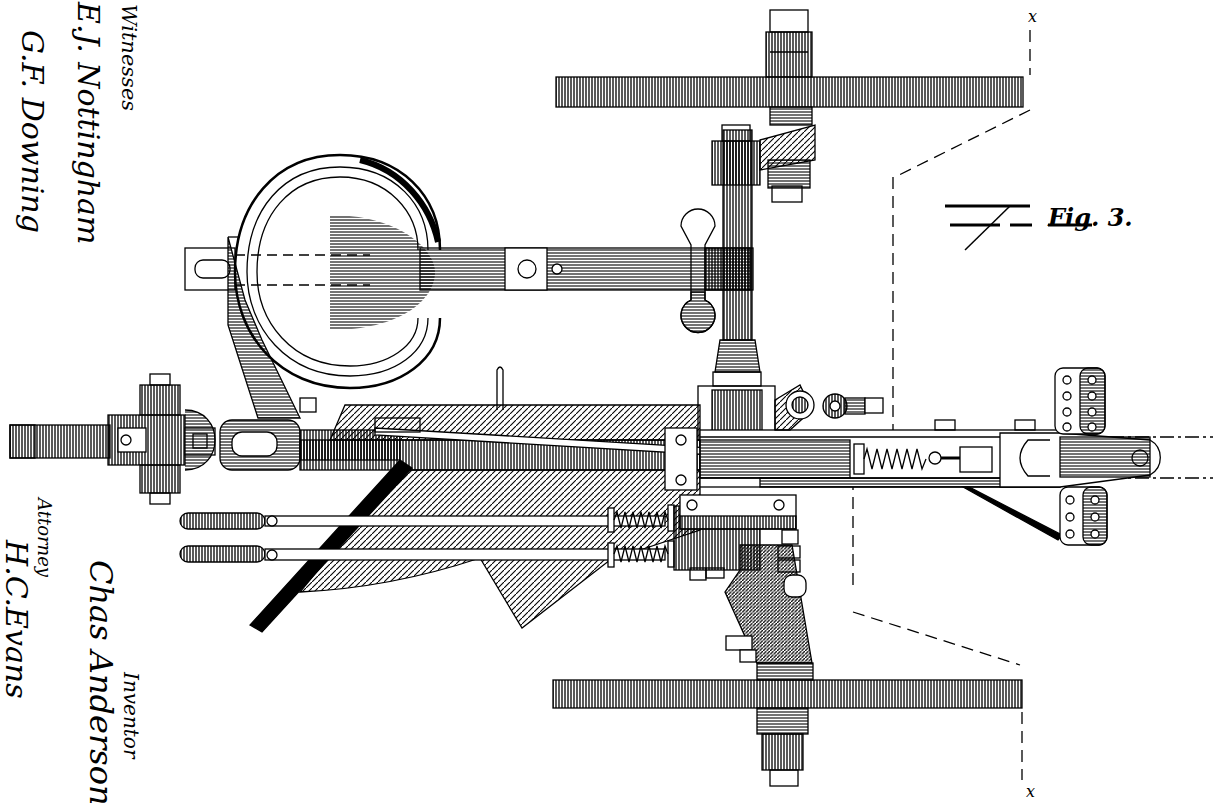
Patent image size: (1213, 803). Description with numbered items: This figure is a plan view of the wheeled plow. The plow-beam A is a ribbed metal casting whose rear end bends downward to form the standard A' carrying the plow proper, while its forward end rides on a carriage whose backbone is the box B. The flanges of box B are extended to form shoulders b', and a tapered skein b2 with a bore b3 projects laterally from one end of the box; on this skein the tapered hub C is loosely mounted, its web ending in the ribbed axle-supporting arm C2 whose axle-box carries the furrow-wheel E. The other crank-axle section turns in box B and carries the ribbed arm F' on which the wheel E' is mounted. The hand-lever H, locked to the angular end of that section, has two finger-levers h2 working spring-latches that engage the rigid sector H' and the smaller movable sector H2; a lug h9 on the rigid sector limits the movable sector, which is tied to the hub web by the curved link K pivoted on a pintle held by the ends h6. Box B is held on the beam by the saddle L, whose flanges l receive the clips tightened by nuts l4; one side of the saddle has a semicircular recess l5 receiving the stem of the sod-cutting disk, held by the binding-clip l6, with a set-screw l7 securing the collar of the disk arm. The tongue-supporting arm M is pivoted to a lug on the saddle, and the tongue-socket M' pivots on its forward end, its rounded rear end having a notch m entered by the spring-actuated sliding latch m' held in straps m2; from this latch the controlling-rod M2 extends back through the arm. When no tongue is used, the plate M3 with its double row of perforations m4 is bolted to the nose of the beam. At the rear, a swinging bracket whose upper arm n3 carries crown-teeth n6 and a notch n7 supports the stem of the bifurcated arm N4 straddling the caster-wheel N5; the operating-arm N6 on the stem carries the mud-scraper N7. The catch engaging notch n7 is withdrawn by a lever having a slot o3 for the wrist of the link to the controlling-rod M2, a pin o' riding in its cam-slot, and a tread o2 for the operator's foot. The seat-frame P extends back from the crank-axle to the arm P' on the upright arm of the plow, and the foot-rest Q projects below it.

The wheel E' is at (789, 67).
The ribbed arm F' is at (777, 163).
The furrow-wheel E is at (787, 719).
The box B is at (758, 392).
The foot-rest Q is at (698, 270).
The seat-frame P is at (469, 258).
The arm P' is at (313, 286).
The caster-wheel N5 is at (30, 426).
The mud-scraper N7 is at (28, 458).
The operating-arm N6 is at (161, 440).
The crown-teeth n6 is at (110, 440).
The bifurcated arm N4 is at (195, 410).
The notch n7 is at (285, 470).
The standard A' is at (350, 465).
The shoulders b' is at (351, 481).
The plow-beam A is at (500, 516).
The hand-lever H is at (354, 546).
The slot o3 is at (547, 450).
The tread o2 is at (455, 405).
The pin o' is at (346, 403).
The saddle L is at (695, 428).
The flanges l is at (668, 470).
The nuts l4 is at (676, 480).
The finger-levers h2 is at (215, 530).
The movable toothed sector H2 is at (690, 568).
The link K is at (712, 578).
The rigid sector H' is at (755, 512).
The lug h9 is at (798, 536).
The ends h6 is at (800, 552).
The tapered hub C is at (728, 600).
The axle-supporting arm C2 is at (806, 588).
The tapered skein b2 is at (726, 640).
The bore b3 is at (745, 650).
The tongue-supporting arm M is at (956, 443).
The controlling-rod M2 is at (775, 458).
The upper arm n3 is at (769, 442).
The straps m2 is at (990, 443).
The spring-actuated sliding latch m' is at (944, 482).
The notch m is at (1080, 458).
The tongue-socket M' is at (1053, 511).
The plate M3 is at (1072, 370).
The perforations m4 is at (1105, 410).
The binding-clip l6 is at (806, 392).
The semicircular vertical recess l5 is at (838, 394).
The set-screw l7 is at (884, 405).